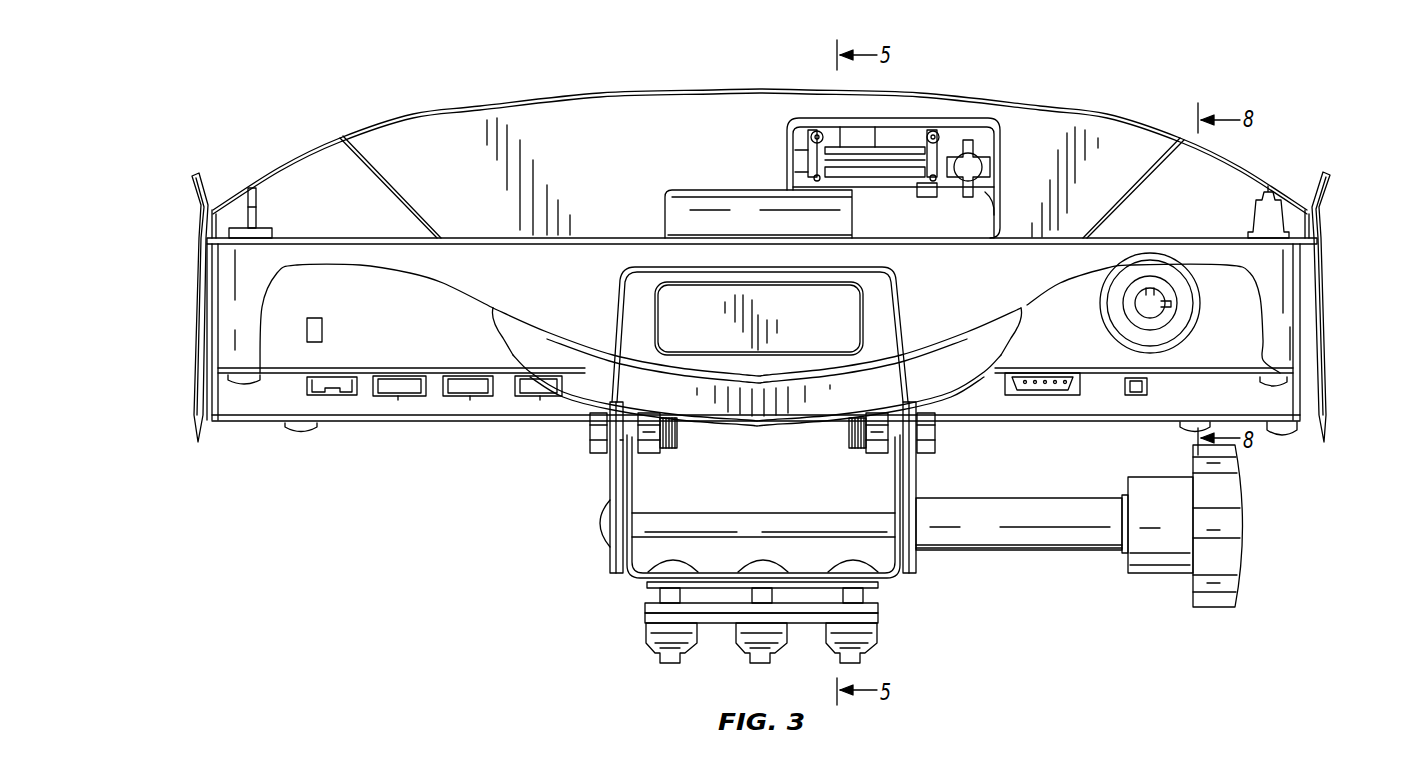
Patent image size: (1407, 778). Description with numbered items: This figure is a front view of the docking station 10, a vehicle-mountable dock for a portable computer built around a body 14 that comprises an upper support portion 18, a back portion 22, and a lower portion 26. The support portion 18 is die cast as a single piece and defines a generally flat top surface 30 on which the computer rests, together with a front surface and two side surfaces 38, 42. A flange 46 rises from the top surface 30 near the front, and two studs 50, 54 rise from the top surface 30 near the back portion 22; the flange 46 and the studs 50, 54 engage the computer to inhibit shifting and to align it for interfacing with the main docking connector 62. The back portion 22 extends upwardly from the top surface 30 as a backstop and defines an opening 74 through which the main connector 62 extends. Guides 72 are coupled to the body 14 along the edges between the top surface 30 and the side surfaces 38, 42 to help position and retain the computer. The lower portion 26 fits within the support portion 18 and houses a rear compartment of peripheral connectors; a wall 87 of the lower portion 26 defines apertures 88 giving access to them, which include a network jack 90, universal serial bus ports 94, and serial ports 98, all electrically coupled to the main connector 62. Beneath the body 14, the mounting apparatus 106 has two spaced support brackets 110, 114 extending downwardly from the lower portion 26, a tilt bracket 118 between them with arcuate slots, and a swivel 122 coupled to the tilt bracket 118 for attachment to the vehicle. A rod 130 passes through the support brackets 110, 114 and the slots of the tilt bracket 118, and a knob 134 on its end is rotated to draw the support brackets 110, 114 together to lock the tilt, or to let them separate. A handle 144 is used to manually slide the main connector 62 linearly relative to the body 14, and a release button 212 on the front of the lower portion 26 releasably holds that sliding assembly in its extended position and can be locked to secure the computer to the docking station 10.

The docking station 10 is at (1079, 41).
The body 14 is at (415, 117).
The back portion 22 is at (600, 113).
The support portion 18 is at (218, 283).
The lower portion 26 is at (280, 345).
The top surface 30 is at (469, 236).
The side surface 38 is at (1322, 300).
The side surface 42 is at (203, 338).
The flange 46 is at (722, 195).
The stud 50 is at (1269, 197).
The stud 54 is at (266, 196).
The main docking connector 62 is at (908, 135).
The guides 72 is at (192, 186).
The opening 74 is at (993, 188).
The wall 87 is at (225, 396).
The apertures 88 is at (392, 397).
The network jack 90 is at (330, 396).
The universal serial bus (USB) ports 94 is at (418, 400).
The serial ports 98 is at (1031, 396).
The mounting apparatus 106 is at (603, 598).
The support bracket 110 is at (914, 487).
The support bracket 114 is at (613, 485).
The tilt bracket 118 is at (895, 577).
The swivel 122 is at (878, 614).
The rod 130 is at (1036, 540).
The knob 134 is at (1226, 553).
The handle 144 is at (725, 398).
The release button 212 is at (1152, 298).